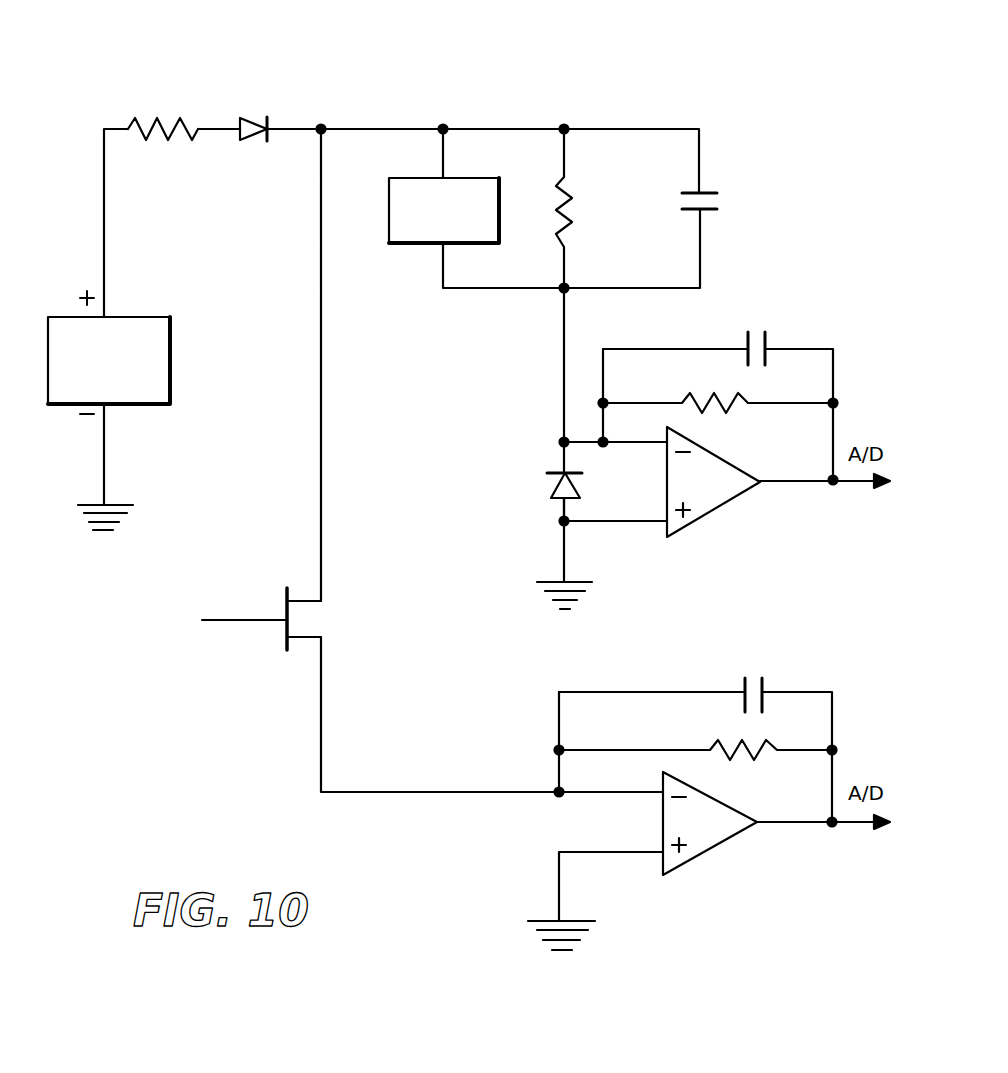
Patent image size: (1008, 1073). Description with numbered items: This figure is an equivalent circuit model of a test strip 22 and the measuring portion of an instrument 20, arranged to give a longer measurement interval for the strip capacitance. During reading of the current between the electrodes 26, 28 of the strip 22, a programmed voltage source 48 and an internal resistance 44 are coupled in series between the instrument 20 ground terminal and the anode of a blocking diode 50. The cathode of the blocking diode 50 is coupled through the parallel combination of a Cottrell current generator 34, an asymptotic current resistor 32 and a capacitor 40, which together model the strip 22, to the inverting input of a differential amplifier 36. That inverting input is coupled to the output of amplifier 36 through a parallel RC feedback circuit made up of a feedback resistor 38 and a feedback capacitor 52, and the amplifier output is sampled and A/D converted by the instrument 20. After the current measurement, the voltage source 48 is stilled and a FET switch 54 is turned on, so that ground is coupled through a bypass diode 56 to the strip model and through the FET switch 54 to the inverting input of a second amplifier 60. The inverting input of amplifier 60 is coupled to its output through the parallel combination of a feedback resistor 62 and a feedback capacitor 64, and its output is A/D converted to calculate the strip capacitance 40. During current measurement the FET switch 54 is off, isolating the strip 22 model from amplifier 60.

The instrument 20 is at (205, 758).
The strip 22 is at (716, 88).
The electrode 26 is at (402, 127).
The electrode 28 is at (565, 378).
The asymptotic current resistor 32 is at (573, 210).
The Cottrell current generator 34 is at (427, 245).
The differential amplifier 36 is at (720, 505).
The feedback resistor 38 is at (742, 403).
The capacitor 40 is at (708, 190).
The internal resistance 44 is at (185, 118).
The programmed voltage source 48 is at (170, 367).
The blocking diode 50 is at (255, 118).
The feedback capacitor 52 is at (767, 337).
The FET switch 54 is at (283, 630).
The bypass diode 56 is at (552, 482).
The amplifier 60 is at (718, 843).
The feedback resistor 62 is at (743, 758).
The feedback capacitor 64 is at (762, 683).